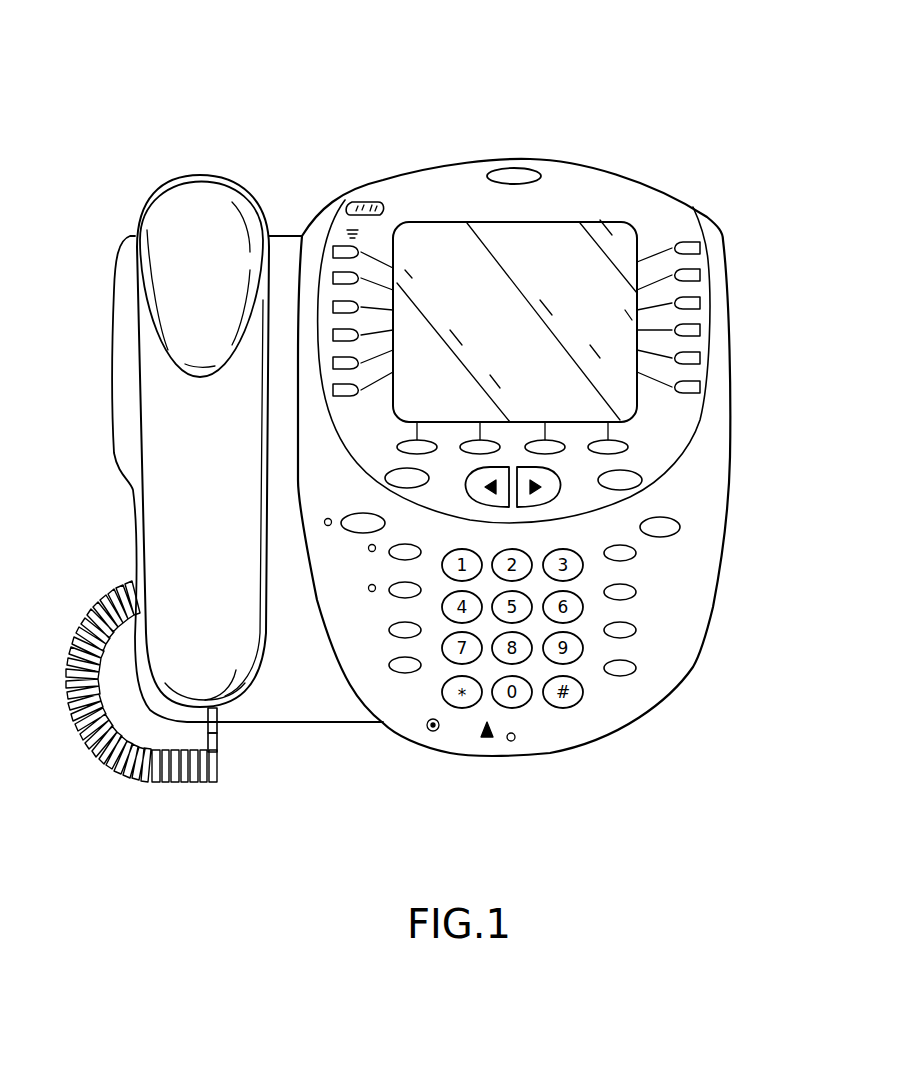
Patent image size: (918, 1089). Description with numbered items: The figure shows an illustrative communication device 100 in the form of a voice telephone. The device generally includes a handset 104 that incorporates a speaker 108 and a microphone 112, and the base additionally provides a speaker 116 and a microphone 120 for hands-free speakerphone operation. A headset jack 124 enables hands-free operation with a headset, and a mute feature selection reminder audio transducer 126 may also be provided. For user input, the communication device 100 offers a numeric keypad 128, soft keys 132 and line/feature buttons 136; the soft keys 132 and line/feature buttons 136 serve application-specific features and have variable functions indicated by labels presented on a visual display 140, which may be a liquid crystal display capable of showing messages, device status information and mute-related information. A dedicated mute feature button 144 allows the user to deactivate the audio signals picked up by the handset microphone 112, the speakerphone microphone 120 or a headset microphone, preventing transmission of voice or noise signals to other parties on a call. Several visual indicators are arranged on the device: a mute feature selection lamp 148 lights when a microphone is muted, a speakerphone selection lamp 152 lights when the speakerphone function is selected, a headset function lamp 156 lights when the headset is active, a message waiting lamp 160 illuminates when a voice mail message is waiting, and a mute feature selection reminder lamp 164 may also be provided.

The communication device 100 is at (683, 83).
The handset 104 is at (226, 178).
The speaker 108 is at (163, 210).
The microphone 112 is at (236, 686).
The speaker 116 is at (112, 380).
The microphone 120 is at (515, 741).
The headset jack 124 is at (437, 732).
The numeric keypad 128 is at (487, 738).
The mute feature selection reminder audio transducer 126 is at (346, 226).
The soft keys 132 is at (630, 443).
The line/feature buttons 136 is at (688, 247).
The visual display 140 is at (430, 232).
The mute feature button 144 is at (397, 598).
The mute feature selection light or lamp 148 is at (370, 592).
The speakerphone selection lamp 152 is at (324, 524).
The headset function lamp 156 is at (368, 550).
The message waiting lamp 160 is at (527, 172).
The mute feature selection reminder lamp 164 is at (370, 210).